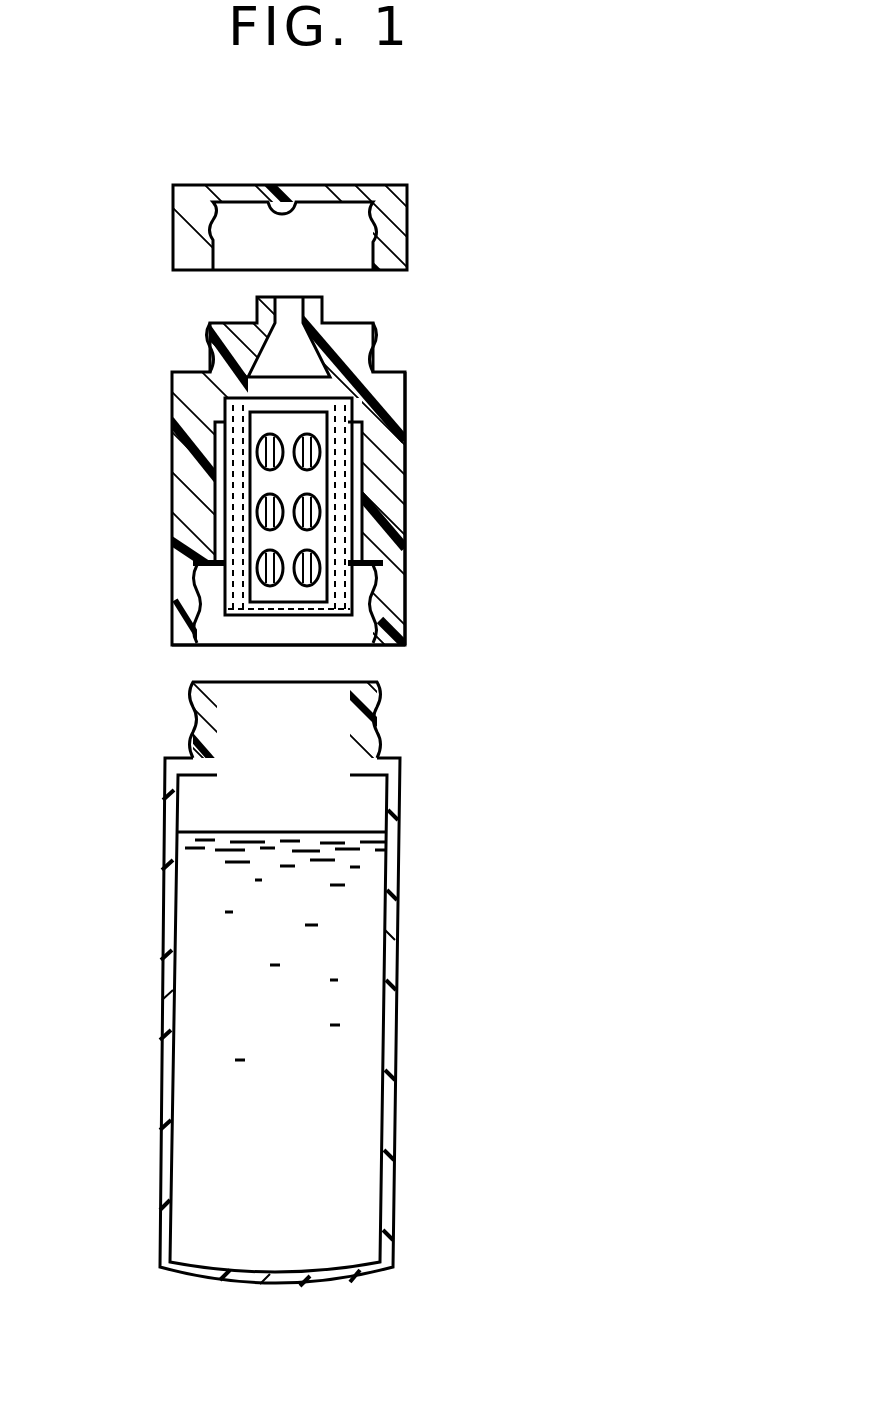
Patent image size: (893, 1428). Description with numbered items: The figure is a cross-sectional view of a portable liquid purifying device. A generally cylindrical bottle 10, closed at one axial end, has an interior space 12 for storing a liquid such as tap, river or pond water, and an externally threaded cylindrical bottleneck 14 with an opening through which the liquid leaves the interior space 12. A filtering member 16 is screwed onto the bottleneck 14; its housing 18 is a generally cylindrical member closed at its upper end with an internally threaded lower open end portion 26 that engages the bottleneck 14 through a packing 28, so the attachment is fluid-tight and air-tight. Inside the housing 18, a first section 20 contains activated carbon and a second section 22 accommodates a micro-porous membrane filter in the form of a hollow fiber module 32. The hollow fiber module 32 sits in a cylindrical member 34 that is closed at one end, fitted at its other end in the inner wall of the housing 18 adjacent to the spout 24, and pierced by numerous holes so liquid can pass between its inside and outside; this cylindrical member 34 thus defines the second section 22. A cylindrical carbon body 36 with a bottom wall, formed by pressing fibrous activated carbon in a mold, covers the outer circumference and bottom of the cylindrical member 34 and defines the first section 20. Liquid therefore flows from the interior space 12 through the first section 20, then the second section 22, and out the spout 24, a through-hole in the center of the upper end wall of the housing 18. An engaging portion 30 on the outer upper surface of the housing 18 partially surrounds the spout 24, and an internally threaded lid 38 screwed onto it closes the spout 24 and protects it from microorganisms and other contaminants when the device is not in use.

The bottle 10 is at (405, 925).
The interior space 12 is at (300, 804).
The bottleneck 14 is at (193, 715).
The filtering member 16 is at (425, 402).
The housing 18 is at (405, 530).
The first section 20 is at (355, 450).
The second section 22 is at (227, 488).
The spout 24 is at (297, 300).
The lower open end portion 26 is at (183, 625).
The packing 28 is at (345, 563).
The engaging portion 30 is at (227, 334).
The hollow fiber module 32 is at (258, 512).
The cylindrical member 34 is at (285, 543).
The carbon body 36 is at (292, 510).
The lid 38 is at (393, 215).